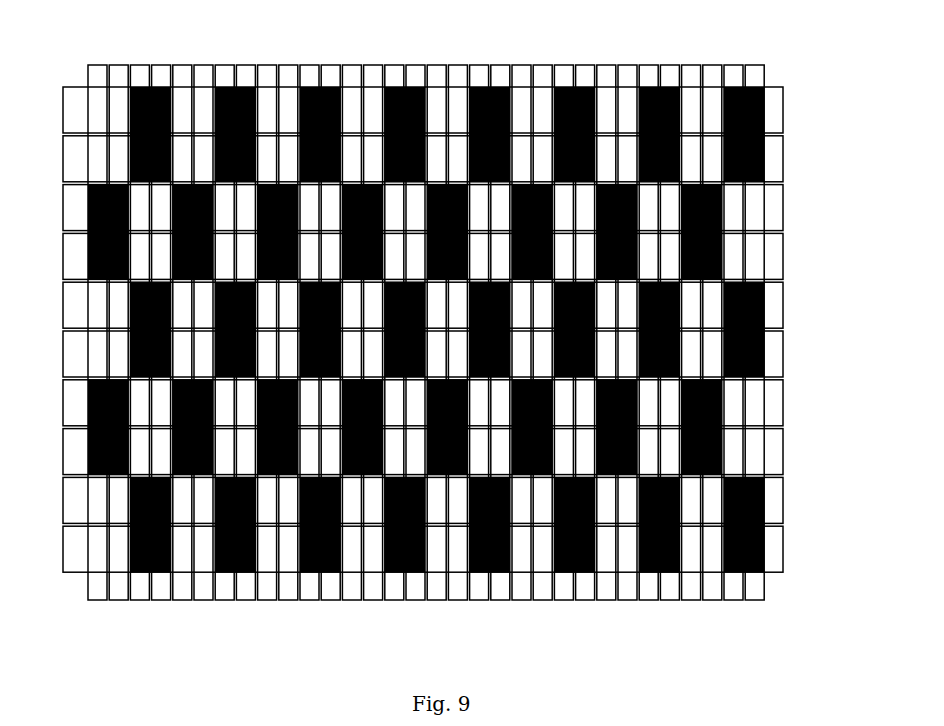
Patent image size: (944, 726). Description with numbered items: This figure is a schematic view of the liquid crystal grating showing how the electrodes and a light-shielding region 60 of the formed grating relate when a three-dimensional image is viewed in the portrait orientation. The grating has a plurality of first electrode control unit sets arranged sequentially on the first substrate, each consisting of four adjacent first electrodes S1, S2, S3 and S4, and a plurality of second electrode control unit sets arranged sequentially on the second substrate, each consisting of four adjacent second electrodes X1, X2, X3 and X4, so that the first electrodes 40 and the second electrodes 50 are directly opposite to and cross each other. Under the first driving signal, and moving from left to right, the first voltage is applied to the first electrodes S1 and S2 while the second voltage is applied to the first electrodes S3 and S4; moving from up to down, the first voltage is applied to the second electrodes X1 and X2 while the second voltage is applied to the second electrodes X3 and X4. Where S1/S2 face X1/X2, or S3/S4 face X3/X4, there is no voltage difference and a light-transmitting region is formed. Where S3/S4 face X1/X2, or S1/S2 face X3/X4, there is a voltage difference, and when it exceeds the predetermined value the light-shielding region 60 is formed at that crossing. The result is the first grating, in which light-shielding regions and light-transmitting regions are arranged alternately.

The first electrode 40 is at (404, 309).
The second electrode 50 is at (433, 320).
The light-shielding region 60 is at (173, 97).
The first electrode S1 is at (93, 62).
The first electrode S2 is at (122, 63).
The first electrode S3 is at (140, 62).
The first electrode S4 is at (162, 63).
The second electrode X1 is at (72, 120).
The second electrode X2 is at (72, 165).
The second electrode X3 is at (72, 212).
The second electrode X4 is at (72, 258).